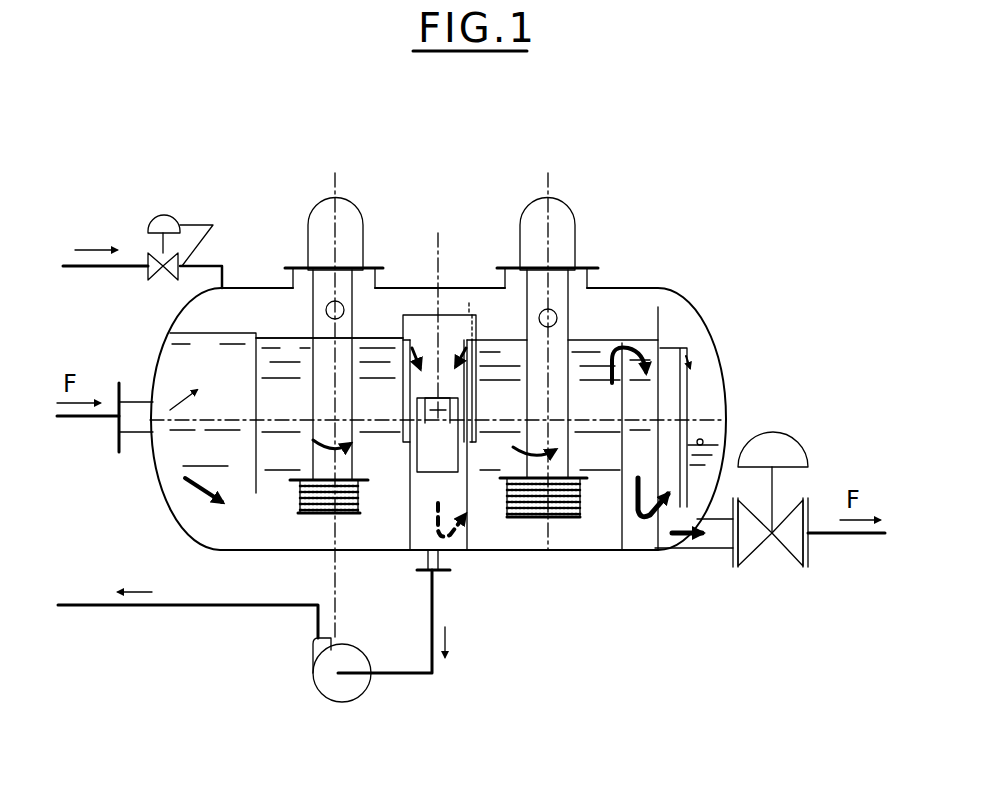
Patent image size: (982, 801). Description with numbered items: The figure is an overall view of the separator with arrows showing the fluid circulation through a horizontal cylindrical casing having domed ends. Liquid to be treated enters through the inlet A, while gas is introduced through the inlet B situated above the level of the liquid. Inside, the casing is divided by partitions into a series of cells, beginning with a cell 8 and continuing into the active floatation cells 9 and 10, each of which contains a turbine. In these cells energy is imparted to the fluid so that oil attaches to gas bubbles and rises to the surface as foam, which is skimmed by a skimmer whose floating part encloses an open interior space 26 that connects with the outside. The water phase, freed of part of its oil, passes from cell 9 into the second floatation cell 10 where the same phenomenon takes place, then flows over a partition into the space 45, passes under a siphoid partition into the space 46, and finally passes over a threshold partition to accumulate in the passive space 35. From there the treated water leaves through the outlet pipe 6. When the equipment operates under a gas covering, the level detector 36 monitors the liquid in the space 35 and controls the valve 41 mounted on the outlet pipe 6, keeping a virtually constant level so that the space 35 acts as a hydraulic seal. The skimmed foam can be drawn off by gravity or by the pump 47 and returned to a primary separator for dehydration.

The liquid inlet A is at (137, 433).
The gas inlet B is at (212, 266).
The treated water outlet pipe 6 is at (720, 540).
The cell 8 is at (213, 417).
The floatation cell 9 is at (329, 375).
The second floatation cell 10 is at (611, 445).
The open interior space 26 is at (438, 435).
The passive space 35 is at (703, 403).
The level detector 36 is at (700, 440).
The valve 41 is at (790, 545).
The space 45 is at (643, 395).
The space 46 is at (672, 388).
The pump 47 is at (350, 688).